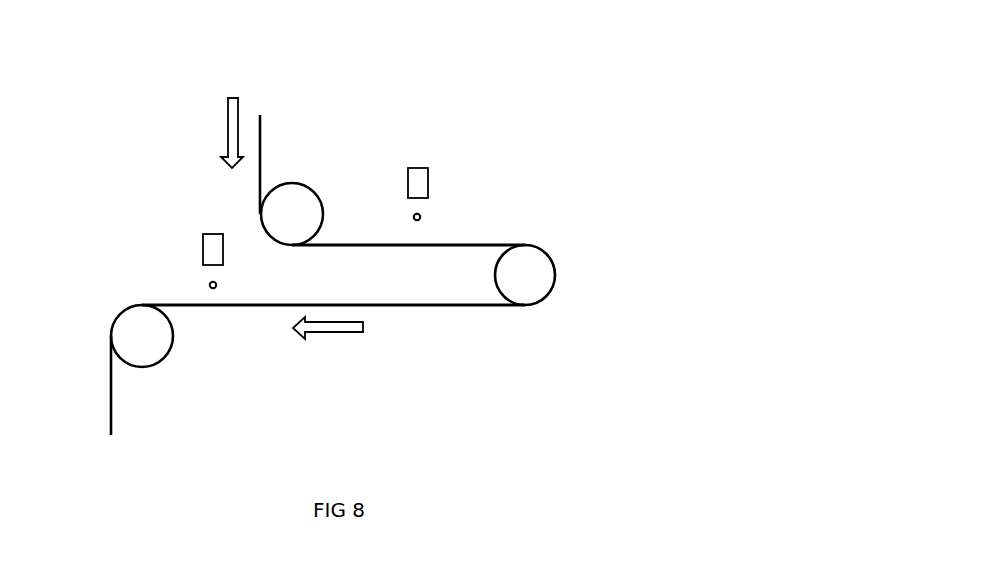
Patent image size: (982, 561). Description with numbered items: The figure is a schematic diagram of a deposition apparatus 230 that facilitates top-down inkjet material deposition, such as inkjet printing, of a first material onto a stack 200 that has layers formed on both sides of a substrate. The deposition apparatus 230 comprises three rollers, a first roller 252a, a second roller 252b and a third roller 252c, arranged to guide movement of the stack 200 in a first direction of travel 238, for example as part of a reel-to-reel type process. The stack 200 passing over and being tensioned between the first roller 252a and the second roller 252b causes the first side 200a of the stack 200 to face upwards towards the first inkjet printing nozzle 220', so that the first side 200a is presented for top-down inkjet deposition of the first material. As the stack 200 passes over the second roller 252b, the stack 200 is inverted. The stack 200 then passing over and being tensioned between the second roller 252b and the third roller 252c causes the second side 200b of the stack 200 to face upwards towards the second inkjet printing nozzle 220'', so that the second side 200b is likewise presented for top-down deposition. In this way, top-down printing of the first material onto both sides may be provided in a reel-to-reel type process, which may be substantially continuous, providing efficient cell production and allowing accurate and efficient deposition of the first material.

The deposition apparatus 230 is at (636, 60).
The stack 200 is at (327, 162).
The first side 200a is at (491, 232).
The second side 200b is at (429, 294).
The first roller 252a is at (310, 188).
The second roller 252b is at (556, 262).
The third roller 252c is at (120, 313).
The first inkjet printing nozzle 220' is at (456, 170).
The second inkjet printing nozzle 220'' is at (172, 246).
The first direction of travel 238 is at (362, 378).